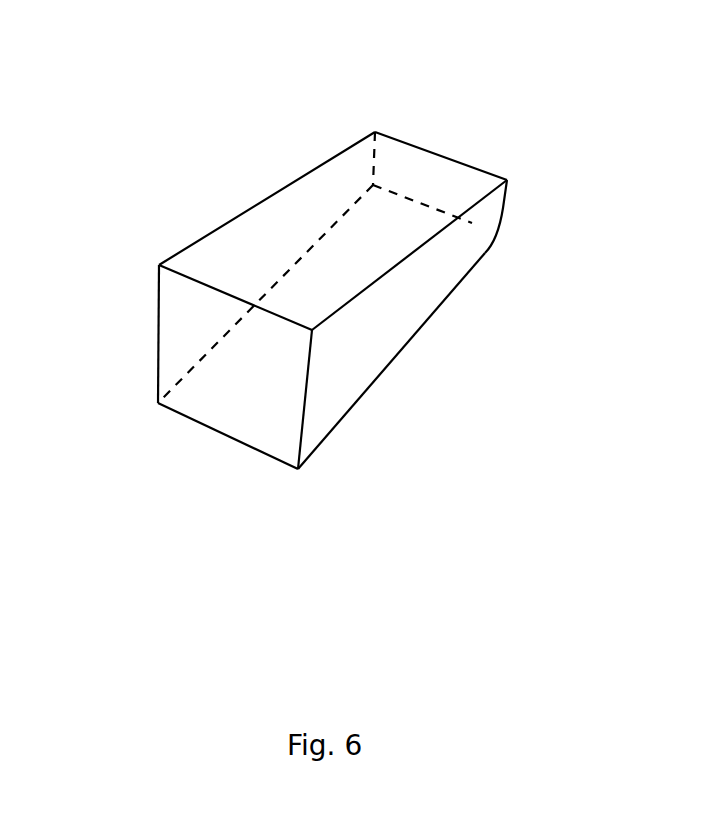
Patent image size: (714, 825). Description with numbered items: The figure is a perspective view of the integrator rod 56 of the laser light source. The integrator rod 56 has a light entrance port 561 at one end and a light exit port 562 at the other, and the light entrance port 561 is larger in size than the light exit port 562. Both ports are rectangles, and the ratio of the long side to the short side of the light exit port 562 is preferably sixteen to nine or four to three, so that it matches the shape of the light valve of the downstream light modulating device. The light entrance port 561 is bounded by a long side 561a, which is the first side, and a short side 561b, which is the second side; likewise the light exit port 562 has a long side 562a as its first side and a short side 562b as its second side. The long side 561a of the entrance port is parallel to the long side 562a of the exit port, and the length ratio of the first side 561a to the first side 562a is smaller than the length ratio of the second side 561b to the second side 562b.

The integrator rod 56 is at (295, 143).
The light entrance port 561 is at (237, 368).
The long side of the light entrance port 561a is at (223, 437).
The short side of the light entrance port 561b is at (305, 383).
The light exit port 562 is at (443, 175).
The long side of the light exit port 562a is at (473, 225).
The short side of the light exit port 562b is at (503, 205).